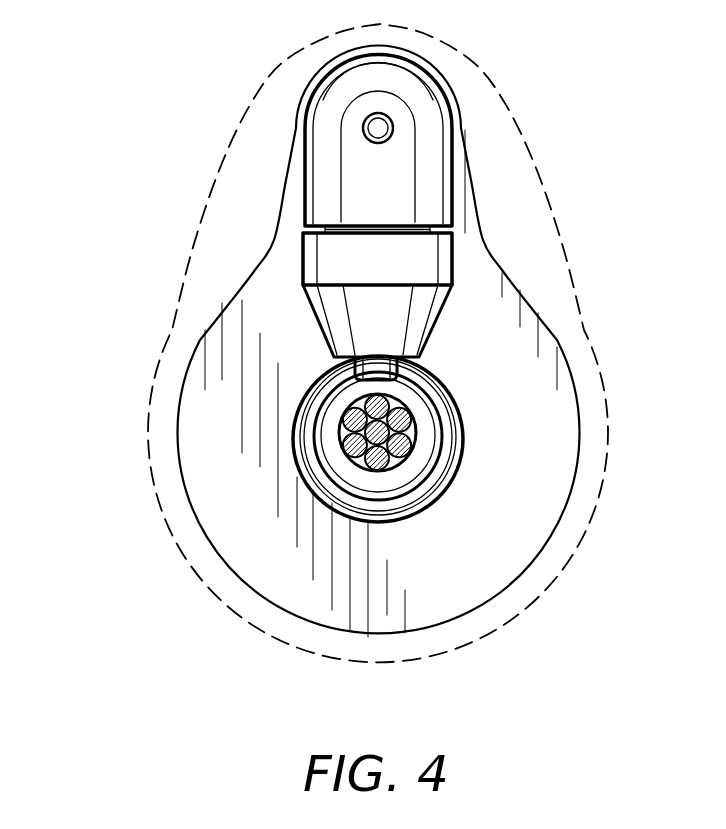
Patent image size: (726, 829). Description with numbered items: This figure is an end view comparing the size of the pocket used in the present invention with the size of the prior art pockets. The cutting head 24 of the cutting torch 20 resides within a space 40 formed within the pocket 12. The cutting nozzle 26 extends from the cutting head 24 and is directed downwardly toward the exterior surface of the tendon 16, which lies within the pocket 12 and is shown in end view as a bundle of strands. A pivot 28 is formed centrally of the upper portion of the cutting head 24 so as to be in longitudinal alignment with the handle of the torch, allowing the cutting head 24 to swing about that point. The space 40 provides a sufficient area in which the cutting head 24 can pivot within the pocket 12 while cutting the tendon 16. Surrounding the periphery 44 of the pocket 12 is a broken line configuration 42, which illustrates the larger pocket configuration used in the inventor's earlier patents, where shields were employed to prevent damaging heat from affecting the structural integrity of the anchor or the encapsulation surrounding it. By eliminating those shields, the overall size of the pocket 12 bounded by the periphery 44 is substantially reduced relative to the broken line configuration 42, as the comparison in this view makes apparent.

The pocket 12 is at (560, 395).
The tendon 16 is at (355, 447).
The cutting torch 20 is at (412, 200).
The cutting head 24 is at (443, 207).
The cutting nozzle 26 is at (370, 363).
The pivot 28 is at (364, 117).
The space 40 is at (470, 250).
The broken line configuration 42 is at (598, 512).
The periphery 44 is at (510, 585).